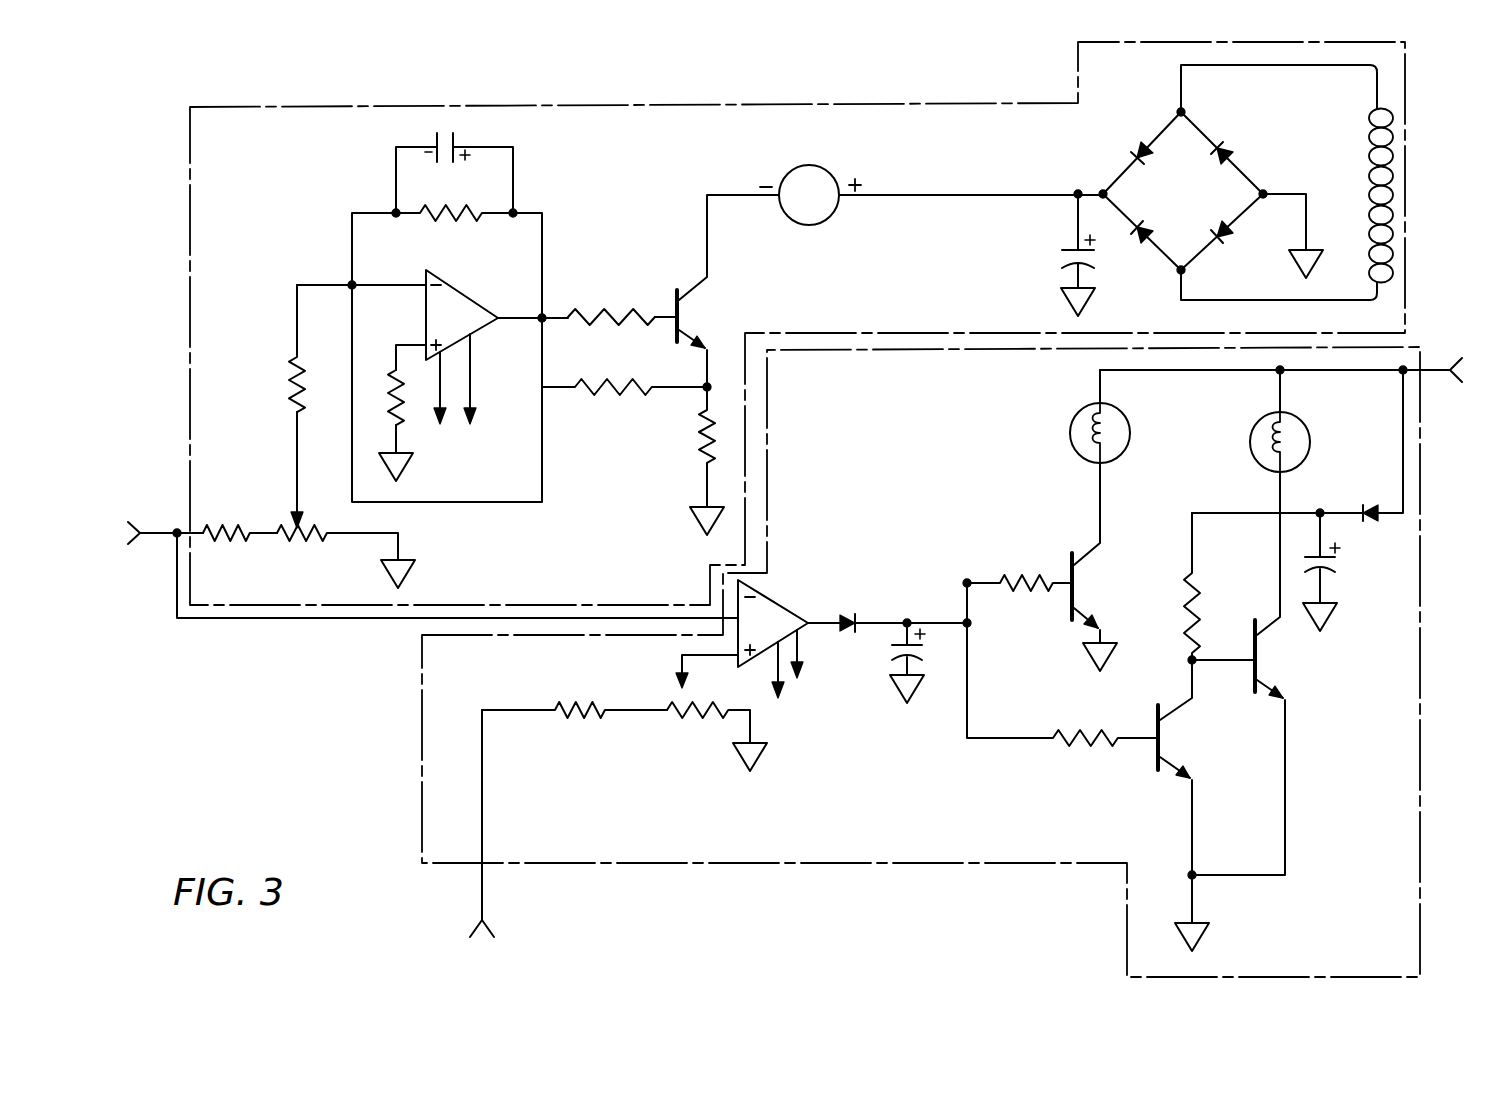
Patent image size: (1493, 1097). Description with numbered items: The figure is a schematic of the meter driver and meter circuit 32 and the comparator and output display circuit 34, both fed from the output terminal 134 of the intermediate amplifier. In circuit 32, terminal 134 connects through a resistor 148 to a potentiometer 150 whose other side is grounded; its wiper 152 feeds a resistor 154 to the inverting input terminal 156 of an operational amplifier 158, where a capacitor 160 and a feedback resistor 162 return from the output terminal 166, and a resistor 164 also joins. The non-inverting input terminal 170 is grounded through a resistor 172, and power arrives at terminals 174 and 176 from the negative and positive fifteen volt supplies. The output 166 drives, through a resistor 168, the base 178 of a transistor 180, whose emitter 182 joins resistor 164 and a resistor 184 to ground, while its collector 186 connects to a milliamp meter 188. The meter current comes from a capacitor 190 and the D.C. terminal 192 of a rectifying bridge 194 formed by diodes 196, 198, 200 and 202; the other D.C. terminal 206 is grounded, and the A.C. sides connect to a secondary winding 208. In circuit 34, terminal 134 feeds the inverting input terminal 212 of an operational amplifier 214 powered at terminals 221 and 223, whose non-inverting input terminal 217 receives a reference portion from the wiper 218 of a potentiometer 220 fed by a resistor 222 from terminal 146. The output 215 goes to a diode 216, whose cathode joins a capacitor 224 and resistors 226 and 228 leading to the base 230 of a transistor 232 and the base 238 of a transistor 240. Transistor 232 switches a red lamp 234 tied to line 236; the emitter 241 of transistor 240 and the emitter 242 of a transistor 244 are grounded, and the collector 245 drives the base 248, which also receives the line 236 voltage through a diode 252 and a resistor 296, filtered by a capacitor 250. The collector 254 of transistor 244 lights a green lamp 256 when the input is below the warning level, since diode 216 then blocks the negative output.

The meter driver and meter circuit 32 is at (665, 130).
The comparator and output display circuit 34 is at (897, 833).
The output terminal 134 is at (166, 540).
The terminal 146 is at (484, 839).
The resistor 148 is at (225, 528).
The potentiometer 150 is at (310, 538).
The wiper 152 is at (297, 500).
The resistor 154 is at (301, 385).
The inverting input terminal 156 is at (420, 285).
The operational amplifier 158 is at (462, 315).
The capacitor 160 is at (455, 144).
The feedback resistor 162 is at (445, 208).
The resistor 164 is at (606, 395).
The output terminal 166 is at (500, 317).
The resistor 168 is at (590, 310).
The non-inverting input terminal 170 is at (424, 345).
The resistor 172 is at (392, 392).
The terminal 174 is at (411, 429).
The terminal 176 is at (472, 343).
The base 178 is at (675, 332).
The transistor 180 is at (701, 316).
The emitter 182 is at (710, 351).
The resistor 184 is at (700, 460).
The collector 186 is at (700, 287).
The milliamp meter 188 is at (806, 166).
The capacitor 190 is at (1065, 259).
The D.C. terminal 192 is at (1101, 190).
The rectifying bridge 194 is at (1183, 191).
The diode 196 is at (1138, 148).
The diode 198 is at (1147, 250).
The diode 200 is at (1228, 248).
The diode 202 is at (1236, 156).
The D.C. terminal 206 is at (1265, 192).
The secondary winding 208 is at (1395, 178).
The inverting input terminal 212 is at (736, 601).
The operational amplifier 214 is at (773, 623).
The output 215 is at (806, 621).
The diode 216 is at (848, 613).
The non-inverting input terminal 217 is at (735, 656).
The wiper 218 is at (677, 682).
The potentiometer 220 is at (705, 718).
The terminal 221 is at (786, 650).
The resistor 222 is at (575, 720).
The terminal 223 is at (799, 640).
The capacitor 224 is at (926, 676).
The resistor 226 is at (1015, 576).
The resistor 228 is at (1068, 730).
The base 230 is at (1070, 580).
The transistor 232 is at (1097, 612).
The red lamp 234 is at (1128, 420).
The line 236 is at (1405, 367).
The base 238 is at (1150, 735).
The transistor 240 is at (1181, 737).
The emitter 241 is at (1191, 776).
The emitter 242 is at (1290, 701).
The transistor 244 is at (1279, 656).
The collector 245 is at (1189, 700).
The base 248 is at (1254, 661).
The capacitor 250 is at (1340, 559).
The diode 252 is at (1372, 505).
The collector 254 is at (1280, 560).
The green lamp 256 is at (1310, 426).
The resistor 296 is at (1180, 612).